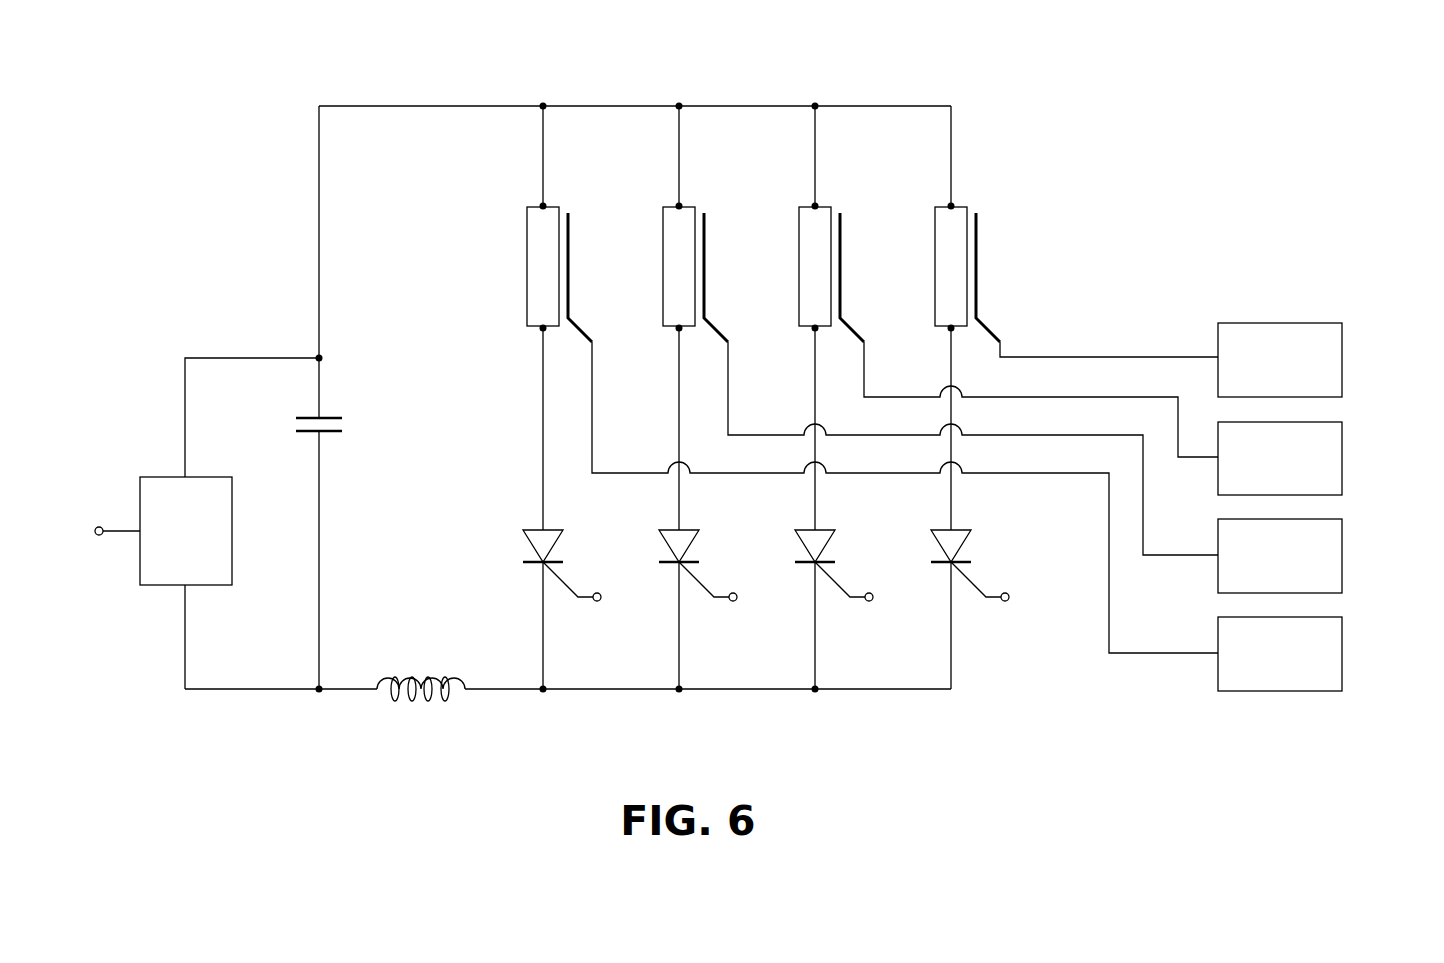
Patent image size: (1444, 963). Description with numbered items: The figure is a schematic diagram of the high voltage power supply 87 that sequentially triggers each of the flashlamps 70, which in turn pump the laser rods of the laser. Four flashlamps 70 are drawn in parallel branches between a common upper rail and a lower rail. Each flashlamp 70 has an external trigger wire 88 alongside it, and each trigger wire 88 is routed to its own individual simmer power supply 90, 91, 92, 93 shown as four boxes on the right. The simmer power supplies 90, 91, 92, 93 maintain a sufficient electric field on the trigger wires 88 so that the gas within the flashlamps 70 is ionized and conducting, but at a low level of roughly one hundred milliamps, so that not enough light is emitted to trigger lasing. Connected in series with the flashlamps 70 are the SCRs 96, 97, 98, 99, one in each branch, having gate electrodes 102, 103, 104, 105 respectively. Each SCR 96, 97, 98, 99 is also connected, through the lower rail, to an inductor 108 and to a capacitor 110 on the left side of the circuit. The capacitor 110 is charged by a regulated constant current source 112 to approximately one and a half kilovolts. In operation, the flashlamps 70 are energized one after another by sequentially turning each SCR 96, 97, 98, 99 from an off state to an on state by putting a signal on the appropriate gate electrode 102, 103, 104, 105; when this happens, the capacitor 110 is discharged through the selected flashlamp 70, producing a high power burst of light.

The high voltage power supply 87 is at (768, 59).
The flashlamp 70 is at (527, 262).
The external trigger wire 88 is at (572, 234).
The simmer power supply 90 is at (1342, 352).
The simmer power supply 91 is at (1342, 458).
The simmer power supply 92 is at (1342, 552).
The simmer power supply 93 is at (1342, 652).
The SCR 96 is at (553, 545).
The SCR 97 is at (695, 543).
The SCR 98 is at (833, 543).
The SCR 99 is at (973, 543).
The gate electrode 102 is at (599, 601).
The gate electrode 103 is at (733, 601).
The gate electrode 104 is at (871, 601).
The gate electrode 105 is at (1005, 601).
The inductor 108 is at (421, 676).
The capacitor 110 is at (330, 432).
The regulated constant current source 112 is at (163, 547).